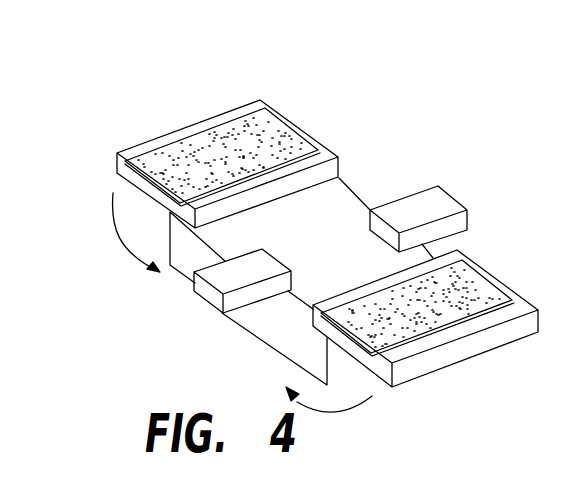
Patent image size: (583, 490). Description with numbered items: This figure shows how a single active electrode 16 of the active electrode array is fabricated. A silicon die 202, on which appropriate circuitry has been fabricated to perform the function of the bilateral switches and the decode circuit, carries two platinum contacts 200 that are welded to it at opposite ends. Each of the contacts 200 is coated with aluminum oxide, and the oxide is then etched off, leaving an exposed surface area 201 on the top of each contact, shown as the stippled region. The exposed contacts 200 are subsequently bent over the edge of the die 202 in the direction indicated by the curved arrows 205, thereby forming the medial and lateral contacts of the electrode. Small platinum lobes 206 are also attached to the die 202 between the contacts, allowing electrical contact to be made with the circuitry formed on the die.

The active electrode 16 is at (398, 142).
The platinum contacts 200 is at (187, 123).
The exposed surface area 201 is at (177, 165).
The silicon die 202 is at (350, 257).
The arrow 205 is at (110, 238).
The platinum lobe 206 is at (222, 278).